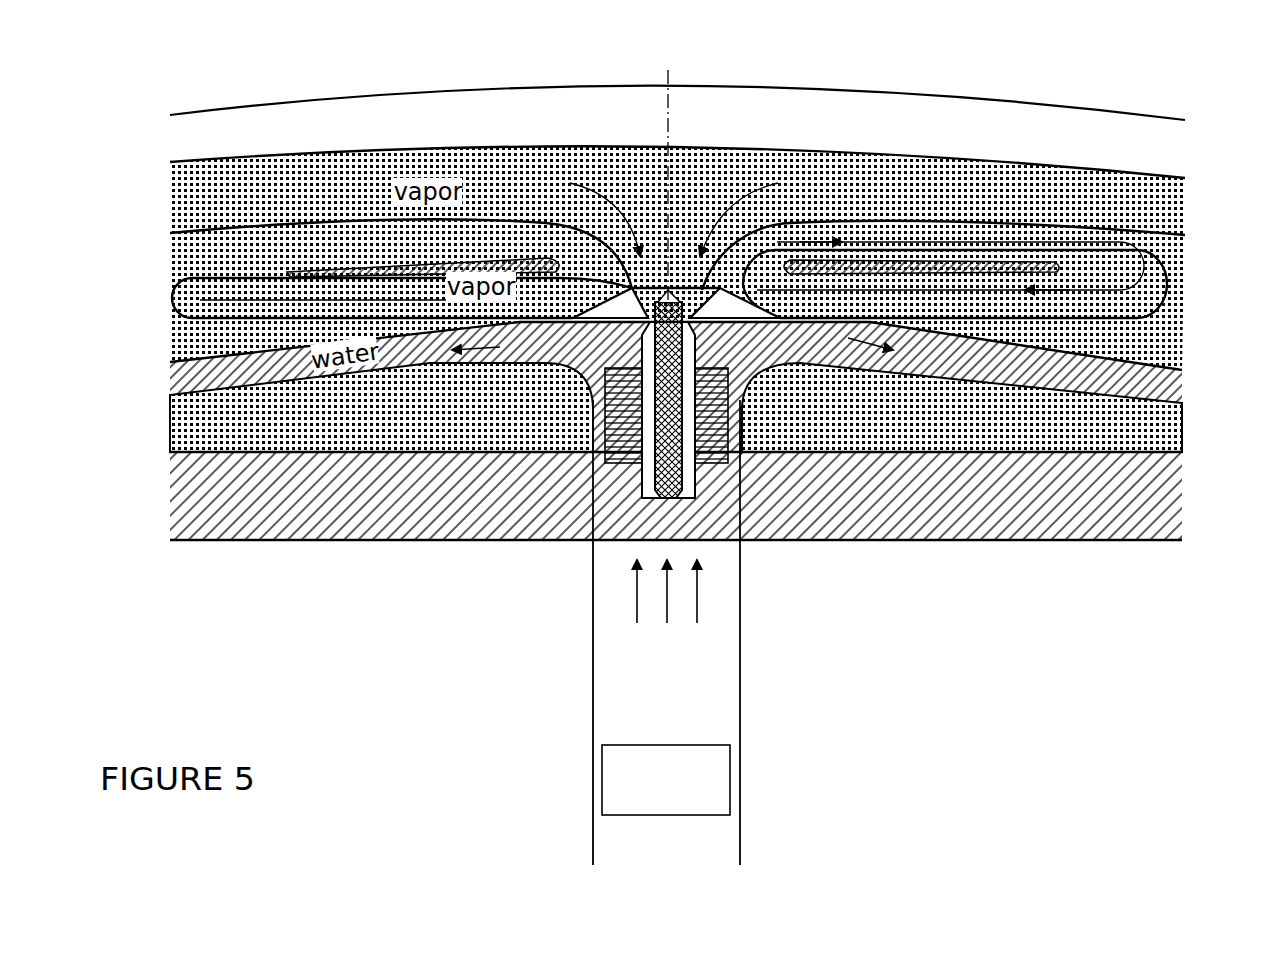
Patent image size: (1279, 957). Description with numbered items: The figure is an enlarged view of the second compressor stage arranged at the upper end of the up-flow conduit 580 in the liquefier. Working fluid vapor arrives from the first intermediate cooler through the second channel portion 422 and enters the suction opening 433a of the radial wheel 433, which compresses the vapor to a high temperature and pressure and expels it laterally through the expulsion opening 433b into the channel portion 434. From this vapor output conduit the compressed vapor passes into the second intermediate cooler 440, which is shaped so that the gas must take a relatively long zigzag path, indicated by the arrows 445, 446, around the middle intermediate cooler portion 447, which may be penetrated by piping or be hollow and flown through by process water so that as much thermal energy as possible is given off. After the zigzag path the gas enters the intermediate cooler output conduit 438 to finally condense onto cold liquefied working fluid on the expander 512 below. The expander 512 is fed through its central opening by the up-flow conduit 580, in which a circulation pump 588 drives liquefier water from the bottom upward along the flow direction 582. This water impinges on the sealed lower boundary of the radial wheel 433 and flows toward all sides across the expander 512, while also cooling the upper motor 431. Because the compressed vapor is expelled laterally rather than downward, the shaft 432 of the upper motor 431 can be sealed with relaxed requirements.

The second channel portion 422 is at (222, 218).
The channel portion 434 is at (318, 292).
The middle intermediate cooler portion 447 is at (550, 262).
The suction opening 433a is at (652, 275).
The radial wheel 433 is at (668, 286).
The expulsion opening 433b is at (728, 287).
The arrows indicating zigzag path 446 is at (790, 262).
The second intermediate cooler 440 is at (985, 255).
The intermediate cooler output conduit 438 is at (1150, 257).
The arrows indicating zigzag path 445 is at (1163, 307).
The expander 512 is at (1182, 405).
The upper motor 431 is at (633, 437).
The shaft 432 is at (585, 405).
The arrows indicating flow direction 582 is at (700, 592).
The up-flow conduit 580 is at (740, 650).
The circulation pump 588 is at (730, 775).